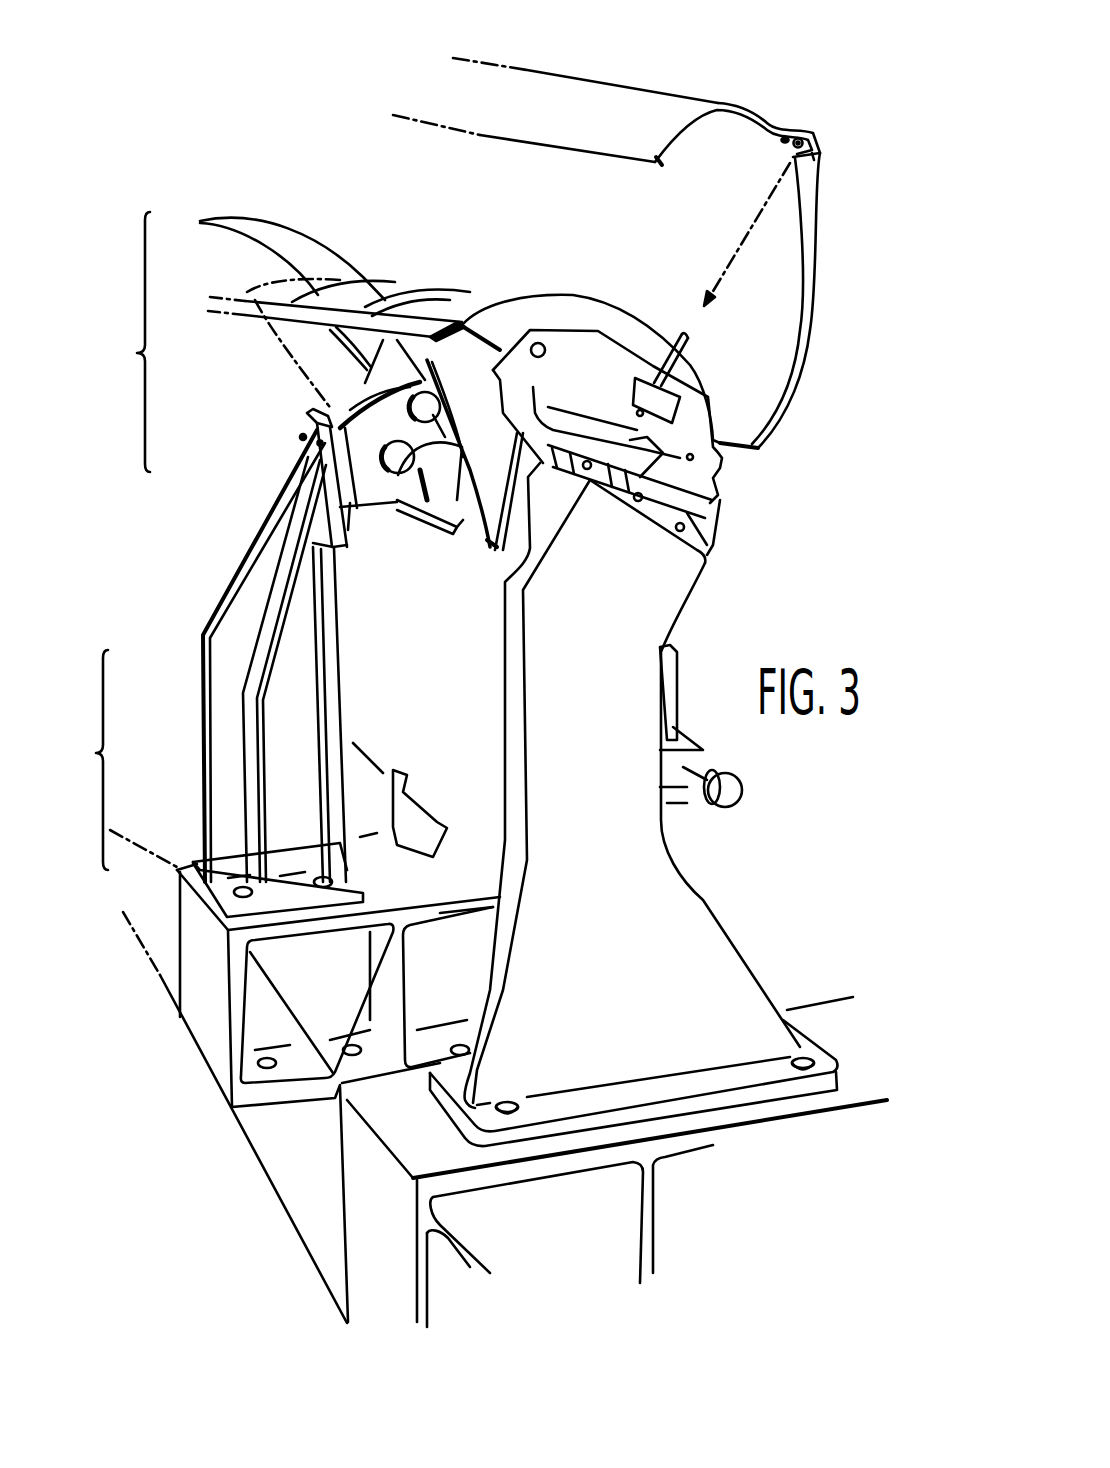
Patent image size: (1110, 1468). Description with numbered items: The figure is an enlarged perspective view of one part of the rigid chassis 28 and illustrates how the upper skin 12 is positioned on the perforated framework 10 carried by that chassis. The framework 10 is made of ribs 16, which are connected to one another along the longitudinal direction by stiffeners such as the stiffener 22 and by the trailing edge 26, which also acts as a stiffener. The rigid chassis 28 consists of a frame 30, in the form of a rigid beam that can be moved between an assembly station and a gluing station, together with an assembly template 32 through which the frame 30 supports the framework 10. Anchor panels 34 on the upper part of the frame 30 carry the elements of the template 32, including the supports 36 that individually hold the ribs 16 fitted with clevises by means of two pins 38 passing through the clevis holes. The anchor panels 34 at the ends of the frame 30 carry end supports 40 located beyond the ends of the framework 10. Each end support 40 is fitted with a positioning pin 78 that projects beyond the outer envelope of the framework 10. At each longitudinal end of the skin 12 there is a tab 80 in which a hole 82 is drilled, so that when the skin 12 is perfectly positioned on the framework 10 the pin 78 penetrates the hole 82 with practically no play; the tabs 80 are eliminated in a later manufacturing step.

The perforated framework 10 is at (123, 342).
The upper skin 12 is at (606, 82).
The ribs 16 is at (210, 221).
The stiffener 22 is at (297, 327).
The trailing edge 26 is at (350, 574).
The rigid chassis 28 is at (85, 760).
The frame 30 is at (257, 1127).
The assembly template 32 is at (216, 594).
The anchor panels 34 is at (215, 993).
The supports 36 is at (300, 672).
The pins 38 is at (443, 427).
The end supports 40 is at (680, 570).
The positioning pin 78 is at (688, 352).
The tab 80 is at (815, 160).
The hole 82 is at (800, 138).